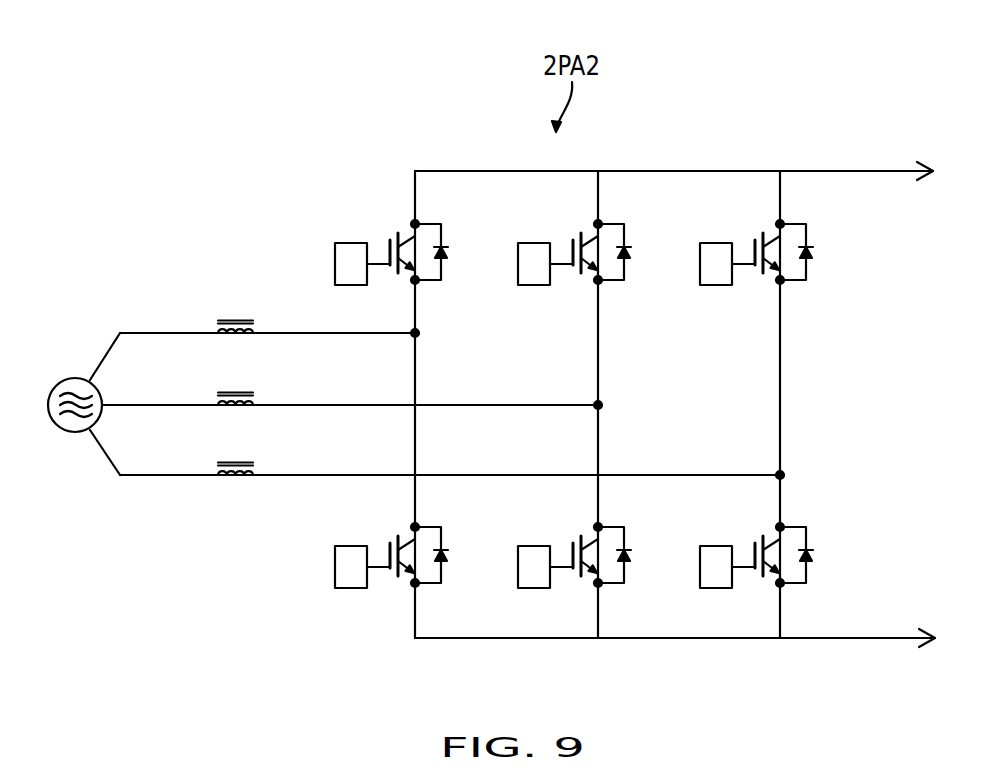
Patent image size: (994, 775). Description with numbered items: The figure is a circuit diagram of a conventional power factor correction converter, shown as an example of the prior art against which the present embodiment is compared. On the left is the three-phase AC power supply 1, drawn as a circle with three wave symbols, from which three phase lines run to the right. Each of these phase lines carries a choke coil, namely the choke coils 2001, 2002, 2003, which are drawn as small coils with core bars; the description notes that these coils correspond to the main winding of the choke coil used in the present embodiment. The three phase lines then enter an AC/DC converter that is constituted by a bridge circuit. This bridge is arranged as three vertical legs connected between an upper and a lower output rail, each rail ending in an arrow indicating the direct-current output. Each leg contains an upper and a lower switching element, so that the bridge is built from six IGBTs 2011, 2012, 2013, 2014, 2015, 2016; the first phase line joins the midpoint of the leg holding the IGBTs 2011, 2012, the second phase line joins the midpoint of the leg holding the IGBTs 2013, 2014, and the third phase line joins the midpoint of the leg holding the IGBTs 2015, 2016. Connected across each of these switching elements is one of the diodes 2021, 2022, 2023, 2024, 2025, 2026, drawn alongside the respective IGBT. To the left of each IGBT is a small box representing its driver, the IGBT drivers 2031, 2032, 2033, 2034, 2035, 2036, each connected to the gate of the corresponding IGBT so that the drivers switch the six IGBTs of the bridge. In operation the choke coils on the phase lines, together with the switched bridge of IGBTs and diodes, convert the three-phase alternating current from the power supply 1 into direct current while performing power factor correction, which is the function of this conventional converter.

The three-phase AC power supply 1 is at (67, 378).
The choke coil 2001 is at (235, 338).
The choke coil 2002 is at (235, 410).
The choke coil 2003 is at (235, 480).
The IGBT 2011 is at (384, 242).
The IGBT 2012 is at (384, 545).
The IGBT 2013 is at (567, 242).
The IGBT 2014 is at (567, 545).
The IGBT 2015 is at (749, 242).
The IGBT 2016 is at (749, 545).
The diode 2021 is at (443, 262).
The diode 2022 is at (443, 565).
The diode 2023 is at (626, 262).
The diode 2024 is at (626, 565).
The diode 2025 is at (808, 262).
The diode 2026 is at (808, 565).
The IGBT driver 2031 is at (350, 285).
The IGBT driver 2032 is at (350, 588).
The IGBT driver 2033 is at (533, 285).
The IGBT driver 2034 is at (533, 588).
The IGBT driver 2035 is at (715, 285).
The IGBT driver 2036 is at (715, 588).